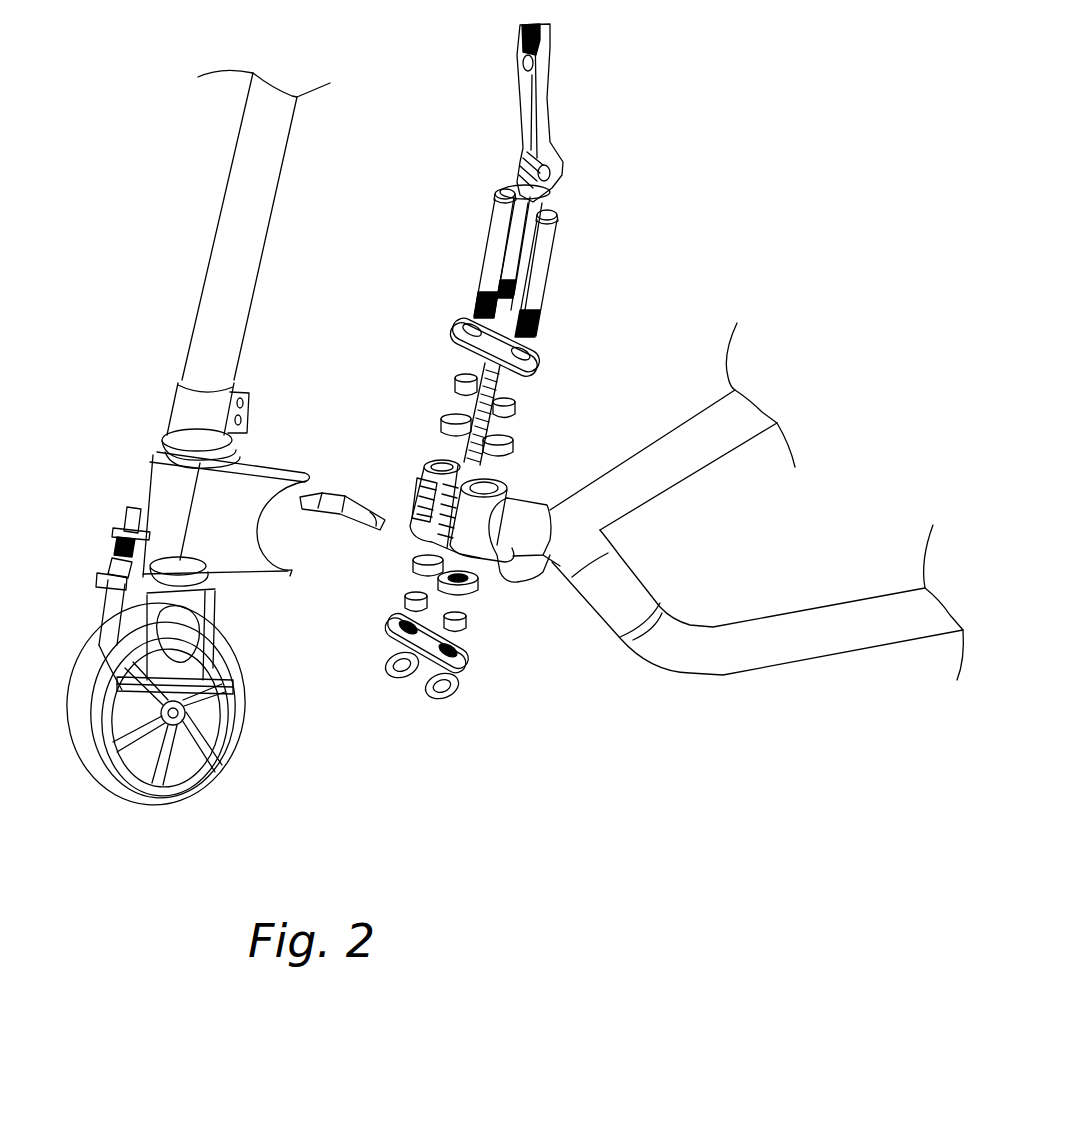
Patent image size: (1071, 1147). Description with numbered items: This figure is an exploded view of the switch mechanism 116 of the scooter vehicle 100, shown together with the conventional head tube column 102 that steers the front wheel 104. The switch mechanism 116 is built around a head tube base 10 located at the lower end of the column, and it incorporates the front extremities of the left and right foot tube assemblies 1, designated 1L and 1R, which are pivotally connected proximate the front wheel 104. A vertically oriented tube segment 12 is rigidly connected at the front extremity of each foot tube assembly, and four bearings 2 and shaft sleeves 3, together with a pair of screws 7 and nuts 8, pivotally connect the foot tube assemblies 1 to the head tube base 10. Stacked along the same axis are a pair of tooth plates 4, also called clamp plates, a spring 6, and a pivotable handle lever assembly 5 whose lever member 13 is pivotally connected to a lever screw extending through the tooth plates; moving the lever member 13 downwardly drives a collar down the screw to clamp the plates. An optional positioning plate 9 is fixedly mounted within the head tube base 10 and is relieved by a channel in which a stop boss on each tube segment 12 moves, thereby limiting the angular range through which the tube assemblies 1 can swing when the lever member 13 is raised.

The scooter vehicle 100 is at (240, 866).
The head tube column 102 is at (255, 290).
The front wheel 104 is at (240, 730).
The head tube base 10 is at (213, 498).
The tube segment 12 is at (122, 545).
The positioning plate 9 is at (378, 530).
The lever member 13 is at (550, 28).
The handle lever assembly 5 is at (565, 167).
The screws 7 is at (556, 292).
The tooth plates 4 is at (540, 355).
The shaft sleeves 3 is at (456, 394).
The bearings 2 is at (510, 443).
The foot tube assemblies 1 is at (432, 474).
The right foot tube assembly 1R is at (732, 450).
The left foot tube assembly 1L is at (913, 637).
The spring 6 is at (472, 460).
The nuts 8 is at (452, 697).
The switch mechanism 116 is at (531, 711).